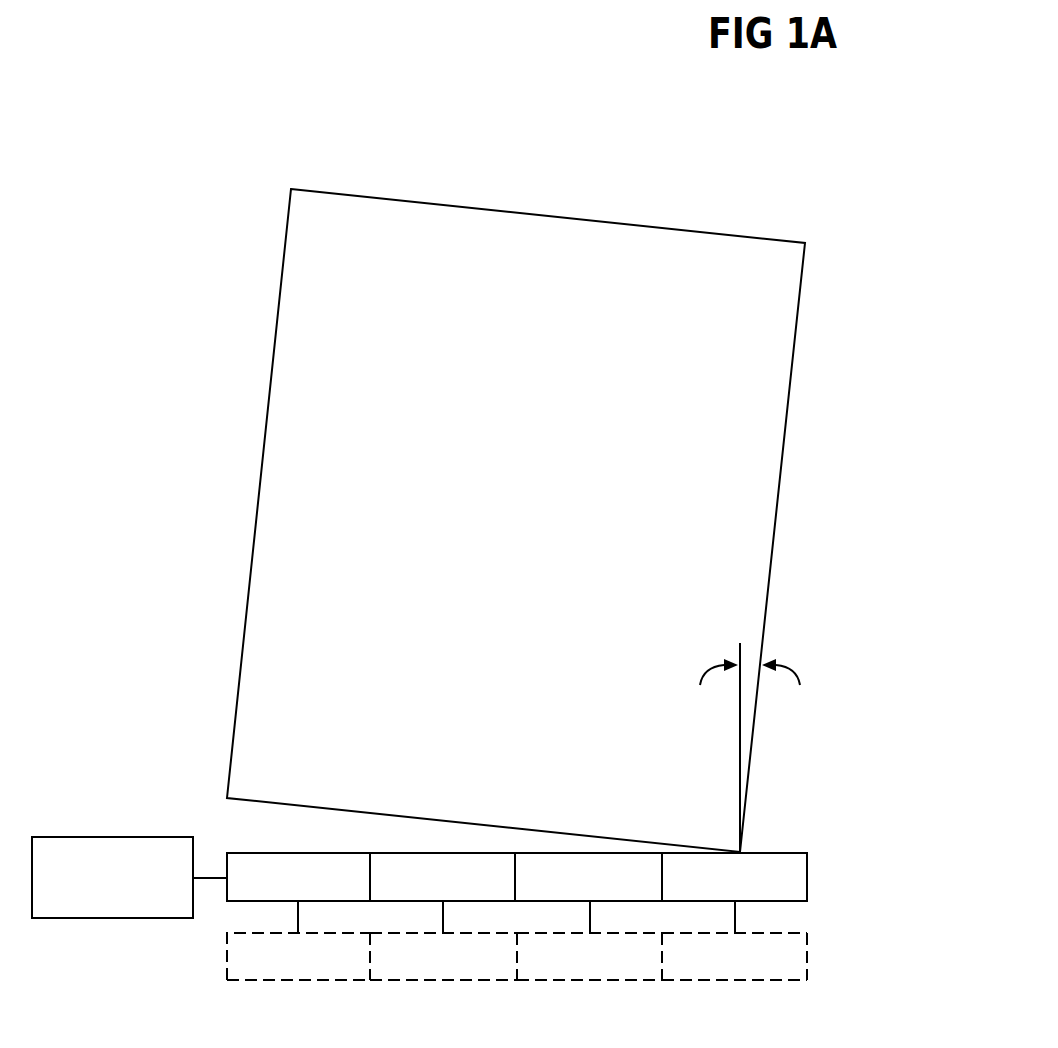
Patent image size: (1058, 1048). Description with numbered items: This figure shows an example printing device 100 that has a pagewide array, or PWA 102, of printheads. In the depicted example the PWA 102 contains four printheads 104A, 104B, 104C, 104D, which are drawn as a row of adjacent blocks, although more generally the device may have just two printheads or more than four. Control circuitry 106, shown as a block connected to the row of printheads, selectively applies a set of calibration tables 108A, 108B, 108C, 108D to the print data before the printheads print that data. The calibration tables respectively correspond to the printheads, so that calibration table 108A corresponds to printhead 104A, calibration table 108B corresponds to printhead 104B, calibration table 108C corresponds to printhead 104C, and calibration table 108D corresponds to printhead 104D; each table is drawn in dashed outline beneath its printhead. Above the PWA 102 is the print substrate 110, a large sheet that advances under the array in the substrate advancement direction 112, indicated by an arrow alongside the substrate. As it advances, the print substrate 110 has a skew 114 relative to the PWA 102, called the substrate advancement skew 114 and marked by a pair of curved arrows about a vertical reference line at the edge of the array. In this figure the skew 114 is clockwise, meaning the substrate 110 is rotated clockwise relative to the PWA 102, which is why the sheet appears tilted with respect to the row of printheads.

The printing device 100 is at (142, 139).
The pagewide array (PWA) 102 is at (829, 878).
The printhead 104A is at (270, 860).
The printhead 104B is at (396, 860).
The printhead 104C is at (548, 895).
The printhead 104D is at (784, 862).
The control circuitry 106 is at (91, 836).
The calibration table 108A is at (270, 980).
The calibration table 108B is at (396, 980).
The calibration table 108C is at (543, 980).
The calibration table 108D is at (688, 980).
The print substrate 110 is at (288, 327).
The substrate advancement direction 112 is at (805, 562).
The substrate advancement skew 114 is at (755, 653).